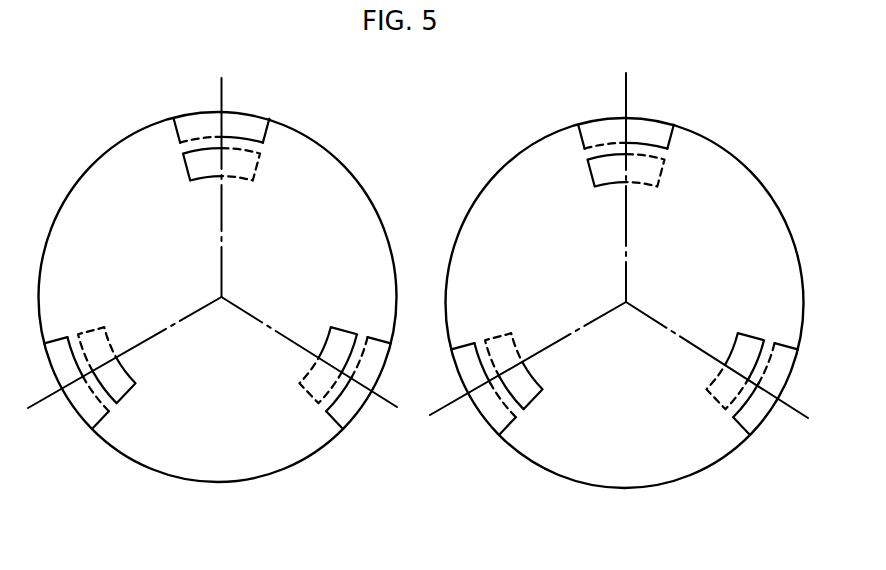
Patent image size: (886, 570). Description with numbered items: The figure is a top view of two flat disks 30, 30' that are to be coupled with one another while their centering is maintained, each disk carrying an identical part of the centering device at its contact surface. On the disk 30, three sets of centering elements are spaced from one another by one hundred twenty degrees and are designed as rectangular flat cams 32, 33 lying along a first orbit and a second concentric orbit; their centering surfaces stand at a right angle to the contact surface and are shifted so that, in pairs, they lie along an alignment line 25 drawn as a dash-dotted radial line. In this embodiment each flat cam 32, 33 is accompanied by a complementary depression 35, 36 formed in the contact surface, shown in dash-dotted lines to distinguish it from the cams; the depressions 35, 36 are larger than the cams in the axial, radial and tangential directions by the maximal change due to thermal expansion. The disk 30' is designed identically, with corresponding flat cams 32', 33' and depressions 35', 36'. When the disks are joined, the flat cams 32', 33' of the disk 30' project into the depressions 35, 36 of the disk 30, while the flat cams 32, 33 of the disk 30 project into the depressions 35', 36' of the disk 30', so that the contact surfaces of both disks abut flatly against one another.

The alignment line 25 is at (219, 267).
The disk 30 is at (218, 326).
The flat cam 32 is at (239, 93).
The flat cam 33 is at (179, 186).
The depression 35 is at (195, 87).
The depression 36 is at (272, 170).
The disk 30' is at (625, 341).
The flat cam 32' is at (638, 102).
The flat cam 33' is at (585, 198).
The depression 35' is at (587, 94).
The depression 36' is at (661, 203).